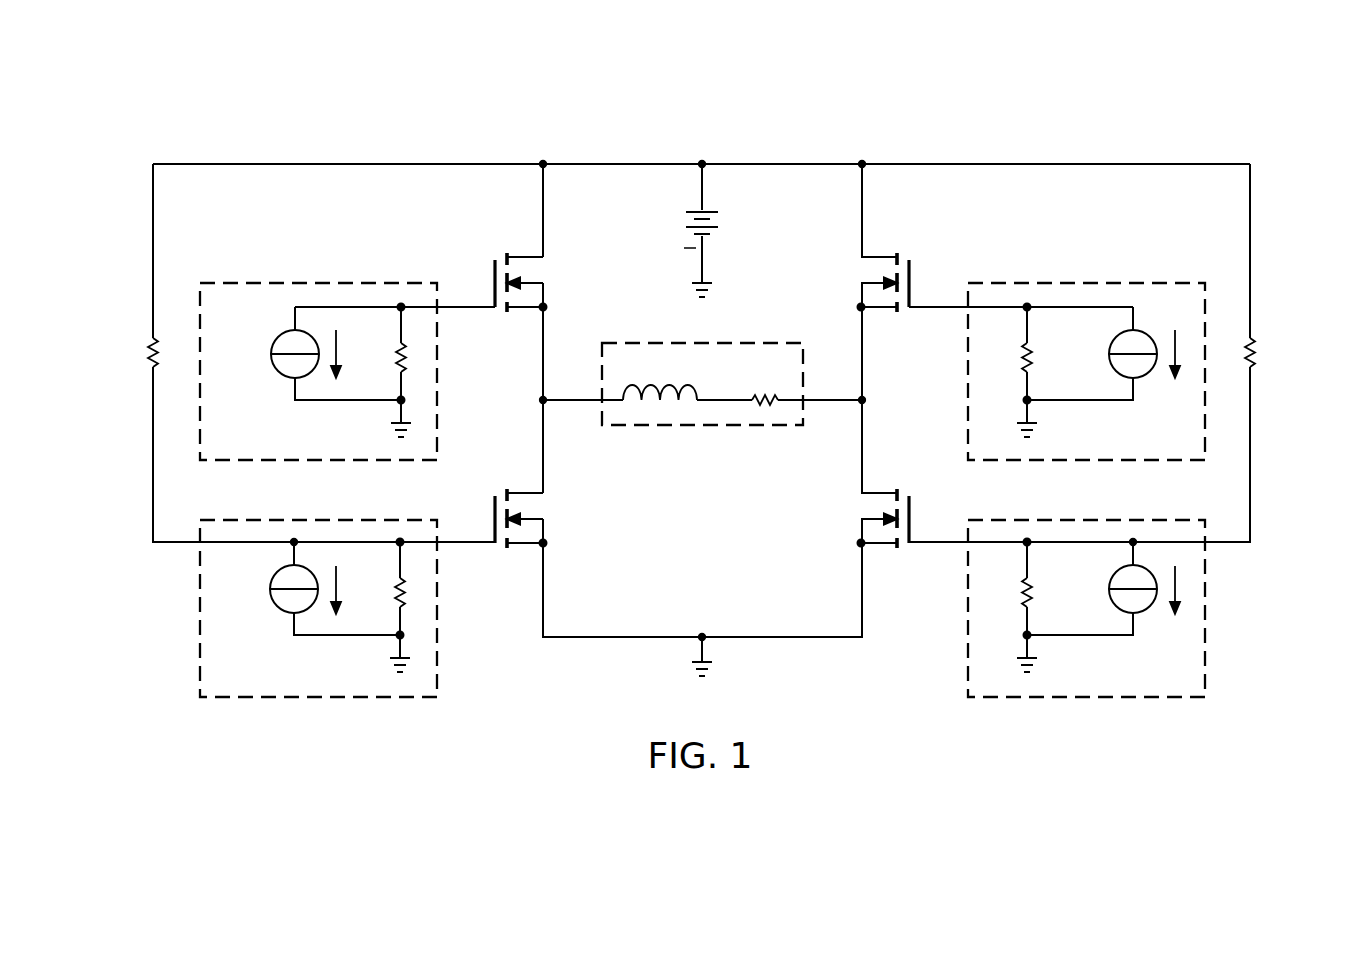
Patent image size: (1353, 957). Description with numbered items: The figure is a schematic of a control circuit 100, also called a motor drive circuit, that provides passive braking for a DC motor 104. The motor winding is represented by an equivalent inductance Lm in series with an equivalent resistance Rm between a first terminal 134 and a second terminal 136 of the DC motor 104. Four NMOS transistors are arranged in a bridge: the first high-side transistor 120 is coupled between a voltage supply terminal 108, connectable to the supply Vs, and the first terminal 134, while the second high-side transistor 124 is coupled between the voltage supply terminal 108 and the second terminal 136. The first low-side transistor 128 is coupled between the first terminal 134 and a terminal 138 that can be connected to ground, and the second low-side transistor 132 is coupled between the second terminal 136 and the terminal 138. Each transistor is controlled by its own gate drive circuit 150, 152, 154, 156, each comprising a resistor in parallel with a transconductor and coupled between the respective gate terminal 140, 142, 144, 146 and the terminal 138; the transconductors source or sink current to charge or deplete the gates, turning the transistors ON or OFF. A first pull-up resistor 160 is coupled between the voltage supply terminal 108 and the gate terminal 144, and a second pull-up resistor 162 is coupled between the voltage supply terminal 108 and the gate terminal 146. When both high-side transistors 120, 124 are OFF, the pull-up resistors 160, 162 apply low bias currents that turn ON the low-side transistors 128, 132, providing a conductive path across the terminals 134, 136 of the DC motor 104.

The control circuit 100 is at (605, 118).
The DC motor 104 is at (715, 427).
The voltage supply terminal 108 is at (706, 159).
The first high-side transistor 120 is at (494, 271).
The second high-side transistor 124 is at (910, 271).
The first low-side transistor 128 is at (494, 508).
The second low-side transistor 132 is at (910, 508).
The first terminal of the DC motor 134 is at (590, 402).
The second terminal of the DC motor 136 is at (814, 402).
The ground terminal 138 is at (706, 633).
The gate terminal of the first high-side transistor 140 is at (487, 309).
The gate terminal of the second high-side transistor 142 is at (916, 309).
The gate terminal of the first low-side transistor 144 is at (487, 546).
The gate terminal of the second low-side transistor 146 is at (916, 546).
The gate drive circuit 150 is at (290, 282).
The gate drive circuit 152 is at (1113, 282).
The gate drive circuit 154 is at (290, 700).
The gate drive circuit 156 is at (1113, 700).
The first pull-up resistor 160 is at (148, 348).
The second pull-up resistor 162 is at (1255, 348).